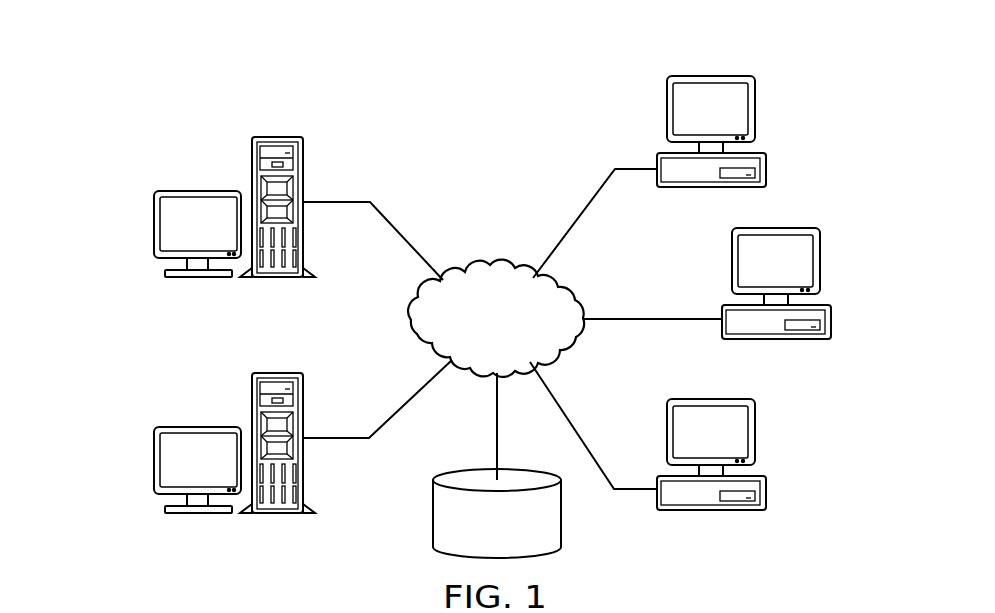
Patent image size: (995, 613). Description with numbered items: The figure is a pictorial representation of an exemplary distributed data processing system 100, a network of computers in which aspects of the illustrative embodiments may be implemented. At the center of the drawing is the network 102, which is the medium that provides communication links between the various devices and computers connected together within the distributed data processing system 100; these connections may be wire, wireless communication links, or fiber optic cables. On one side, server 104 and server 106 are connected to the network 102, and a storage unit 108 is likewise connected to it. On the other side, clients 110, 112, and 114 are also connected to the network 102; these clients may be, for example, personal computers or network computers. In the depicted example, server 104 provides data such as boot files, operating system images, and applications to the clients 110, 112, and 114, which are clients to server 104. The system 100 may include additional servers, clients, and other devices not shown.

The distributed data processing system 100 is at (372, 119).
The network 102 is at (477, 272).
The server 104 is at (154, 224).
The server 106 is at (154, 457).
The storage unit 108 is at (433, 508).
The client 110 is at (768, 160).
The client 112 is at (832, 327).
The client 114 is at (767, 498).